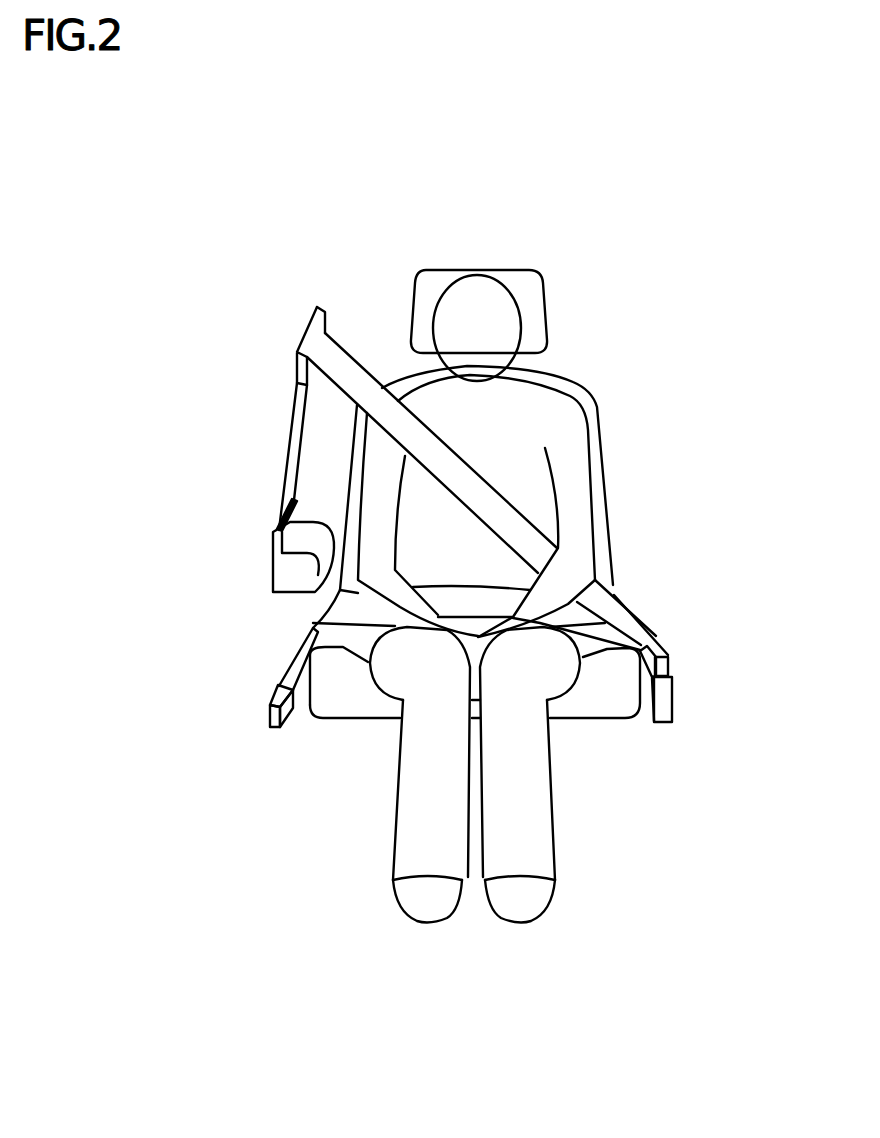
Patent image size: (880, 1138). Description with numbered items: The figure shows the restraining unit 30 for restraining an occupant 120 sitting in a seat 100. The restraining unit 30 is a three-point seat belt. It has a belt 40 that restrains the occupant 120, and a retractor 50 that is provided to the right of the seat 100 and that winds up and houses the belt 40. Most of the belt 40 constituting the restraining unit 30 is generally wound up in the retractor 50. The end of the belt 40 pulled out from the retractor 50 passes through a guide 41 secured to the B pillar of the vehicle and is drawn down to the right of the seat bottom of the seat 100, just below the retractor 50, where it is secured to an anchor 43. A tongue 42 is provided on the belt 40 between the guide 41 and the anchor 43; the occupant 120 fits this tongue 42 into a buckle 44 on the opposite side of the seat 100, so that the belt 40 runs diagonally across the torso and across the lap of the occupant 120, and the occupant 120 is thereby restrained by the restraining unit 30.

The restraining unit 30 is at (468, 473).
The belt 40 is at (288, 455).
The guide 41 is at (321, 307).
The tongue 42 is at (669, 660).
The anchor 43 is at (270, 700).
The buckle 44 is at (673, 693).
The retractor 50 is at (273, 570).
The seat 100 is at (584, 382).
The occupant 120 is at (497, 282).